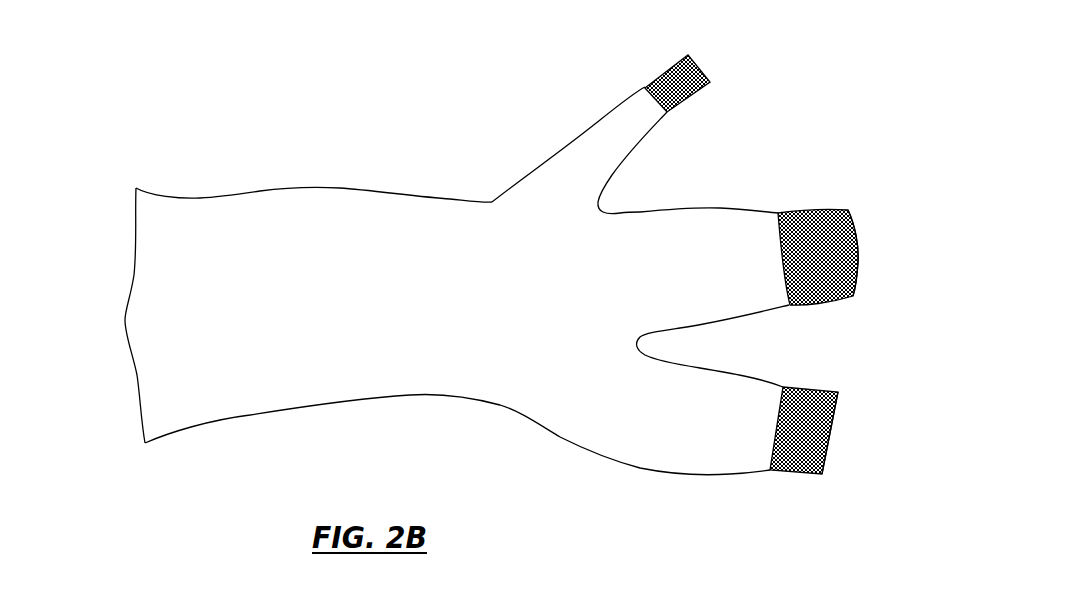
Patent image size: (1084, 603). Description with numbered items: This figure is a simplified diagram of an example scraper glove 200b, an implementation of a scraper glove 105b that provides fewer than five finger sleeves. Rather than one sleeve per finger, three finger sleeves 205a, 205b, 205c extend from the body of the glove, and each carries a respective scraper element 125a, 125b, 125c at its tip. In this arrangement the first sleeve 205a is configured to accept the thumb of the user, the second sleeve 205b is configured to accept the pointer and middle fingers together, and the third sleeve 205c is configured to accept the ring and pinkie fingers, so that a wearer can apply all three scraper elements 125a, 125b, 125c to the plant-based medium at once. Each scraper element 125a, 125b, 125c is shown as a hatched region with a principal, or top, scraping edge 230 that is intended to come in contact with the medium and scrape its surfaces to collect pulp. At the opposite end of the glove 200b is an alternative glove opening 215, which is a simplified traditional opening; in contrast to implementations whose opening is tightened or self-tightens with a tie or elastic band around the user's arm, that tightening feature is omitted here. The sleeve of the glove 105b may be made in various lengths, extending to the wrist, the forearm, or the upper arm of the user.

The glove 200b is at (490, 302).
The scraper glove 105b is at (323, 168).
The glove opening 215 is at (103, 273).
The first finger sleeve 205a is at (647, 122).
The second finger sleeve 205b is at (793, 261).
The third finger sleeve 205c is at (748, 461).
The scraper element 125a is at (718, 62).
The scraper element 125b is at (858, 225).
The scraper element 125c is at (855, 420).
The top scraping edge 230 is at (857, 285).